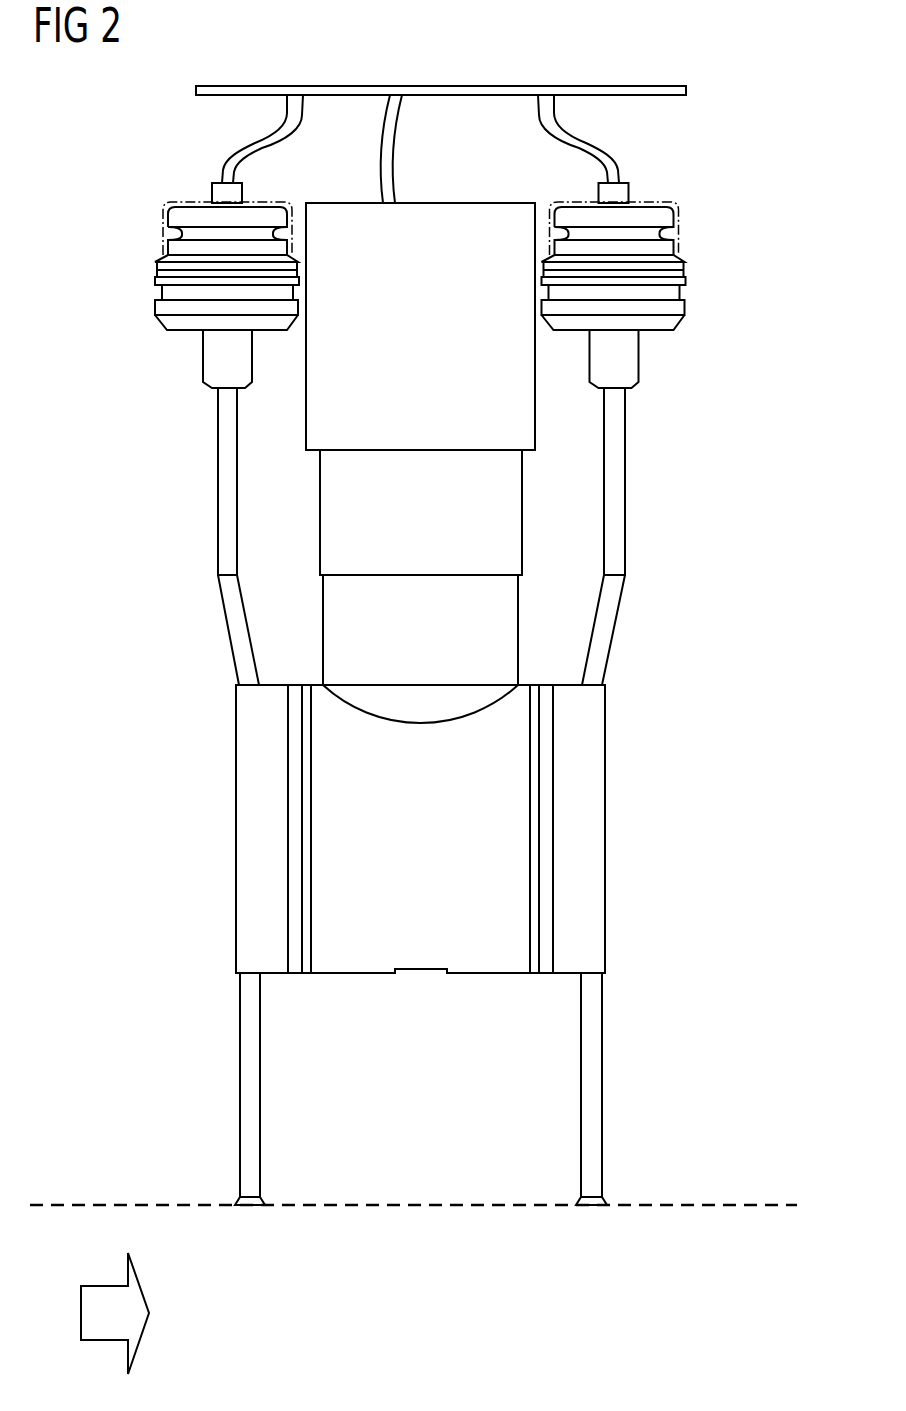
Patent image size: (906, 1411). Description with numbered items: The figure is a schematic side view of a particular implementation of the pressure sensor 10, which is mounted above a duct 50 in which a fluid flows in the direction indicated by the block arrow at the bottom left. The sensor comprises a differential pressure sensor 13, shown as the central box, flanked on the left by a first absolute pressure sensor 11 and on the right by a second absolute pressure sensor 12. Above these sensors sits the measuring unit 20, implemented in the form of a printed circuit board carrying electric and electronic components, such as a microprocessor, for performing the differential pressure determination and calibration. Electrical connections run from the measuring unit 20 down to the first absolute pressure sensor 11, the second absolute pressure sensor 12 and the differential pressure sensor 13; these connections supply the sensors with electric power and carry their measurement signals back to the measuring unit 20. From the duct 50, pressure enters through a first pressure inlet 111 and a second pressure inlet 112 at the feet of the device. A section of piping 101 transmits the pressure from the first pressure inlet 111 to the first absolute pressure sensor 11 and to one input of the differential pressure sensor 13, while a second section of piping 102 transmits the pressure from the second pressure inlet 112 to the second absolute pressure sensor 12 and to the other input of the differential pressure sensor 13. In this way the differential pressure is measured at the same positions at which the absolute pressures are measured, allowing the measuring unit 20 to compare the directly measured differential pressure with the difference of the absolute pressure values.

The pressure sensor 10 is at (663, 786).
The first absolute pressure sensor 11 is at (161, 215).
The second absolute pressure sensor 12 is at (679, 216).
The differential pressure sensor 13 is at (462, 203).
The measuring unit 20 is at (362, 87).
The duct 50 is at (703, 1245).
The section of piping 101 is at (240, 1083).
The section of piping 102 is at (600, 1084).
The first pressure inlet 111 is at (248, 1208).
The second pressure inlet 112 is at (588, 1208).